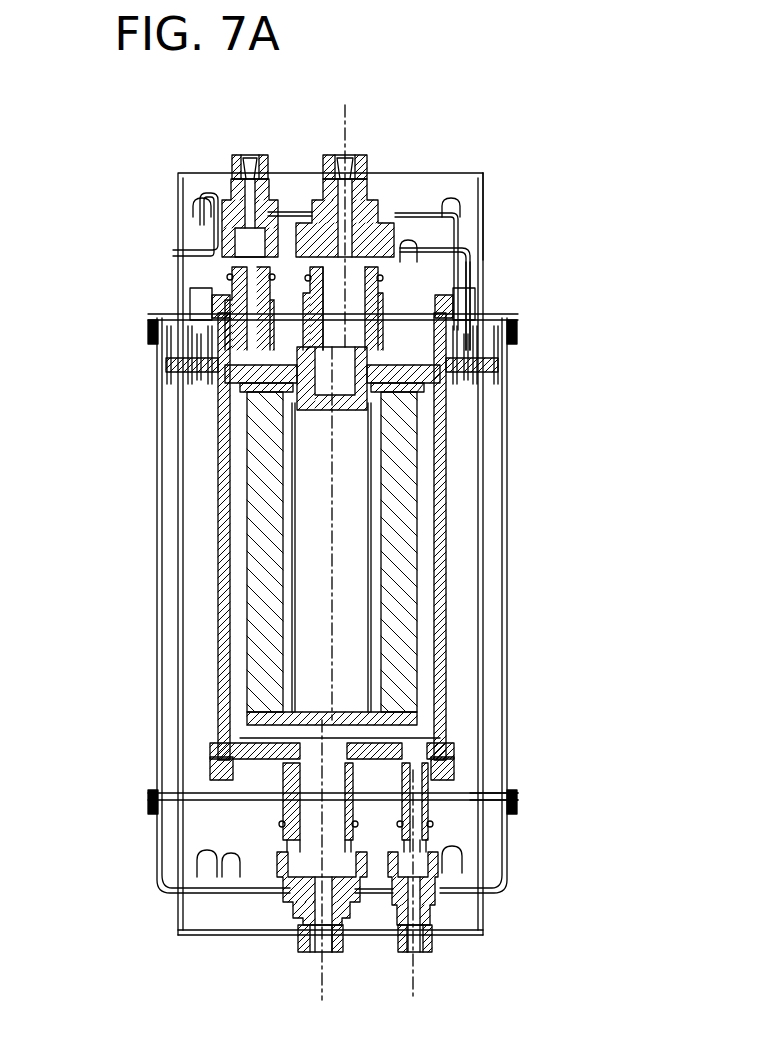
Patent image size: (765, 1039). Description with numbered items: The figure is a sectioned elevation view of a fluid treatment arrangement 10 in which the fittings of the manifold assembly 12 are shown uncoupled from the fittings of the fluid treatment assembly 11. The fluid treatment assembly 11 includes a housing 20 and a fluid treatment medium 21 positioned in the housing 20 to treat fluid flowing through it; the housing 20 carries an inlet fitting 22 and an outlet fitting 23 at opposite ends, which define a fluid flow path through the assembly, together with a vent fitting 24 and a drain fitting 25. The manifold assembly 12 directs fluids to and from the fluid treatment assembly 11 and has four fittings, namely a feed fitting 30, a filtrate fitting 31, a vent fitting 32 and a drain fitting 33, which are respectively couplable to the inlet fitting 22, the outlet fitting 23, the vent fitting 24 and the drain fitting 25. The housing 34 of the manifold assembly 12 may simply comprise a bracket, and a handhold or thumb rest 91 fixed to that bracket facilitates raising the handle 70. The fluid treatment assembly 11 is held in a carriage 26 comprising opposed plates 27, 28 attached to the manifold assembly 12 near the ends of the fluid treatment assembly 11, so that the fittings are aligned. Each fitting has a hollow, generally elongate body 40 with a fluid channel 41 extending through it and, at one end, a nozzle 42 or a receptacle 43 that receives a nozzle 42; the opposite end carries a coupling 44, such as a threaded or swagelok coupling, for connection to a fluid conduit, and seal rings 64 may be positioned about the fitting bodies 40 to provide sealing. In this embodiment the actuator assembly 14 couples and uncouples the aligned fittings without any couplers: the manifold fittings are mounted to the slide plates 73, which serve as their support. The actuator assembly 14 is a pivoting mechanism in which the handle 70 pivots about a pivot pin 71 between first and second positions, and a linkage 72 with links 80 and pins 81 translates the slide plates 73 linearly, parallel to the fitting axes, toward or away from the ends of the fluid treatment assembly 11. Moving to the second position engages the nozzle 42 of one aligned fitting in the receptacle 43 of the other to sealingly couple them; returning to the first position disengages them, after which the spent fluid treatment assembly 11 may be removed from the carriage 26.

The fluid treatment arrangement 10 is at (118, 520).
The fluid treatment assembly 11 is at (222, 623).
The manifold assembly 12 is at (445, 172).
The actuator assembly 14 is at (507, 553).
The housing 20 is at (262, 662).
The fluid treatment medium 21 is at (300, 690).
The inlet fitting 22 is at (262, 772).
The outlet fitting 23 is at (366, 320).
The vent fitting 24 is at (215, 318).
The drain fitting 25 is at (505, 803).
The carriage 26 is at (290, 372).
The plate 27 is at (420, 375).
The plate 28 is at (255, 803).
The feed fitting 30 is at (220, 889).
The filtrate fitting 31 is at (440, 215).
The vent fitting 32 is at (208, 200).
The drain fitting 33 is at (482, 908).
The housing 34 is at (483, 178).
The body 40 is at (226, 180).
The fluid channel 41 is at (252, 155).
The nozzle 42 is at (232, 270).
The receptacle 43 is at (215, 238).
The coupling 44 is at (232, 168).
The seal ring 64 is at (210, 302).
The handle 70 is at (470, 262).
The pivot pin 71 is at (500, 366).
The linkage 72 is at (148, 332).
The slide plate 73 is at (292, 211).
The link 80 is at (157, 577).
The pin 81 is at (148, 800).
The thumb rest 91 is at (440, 250).